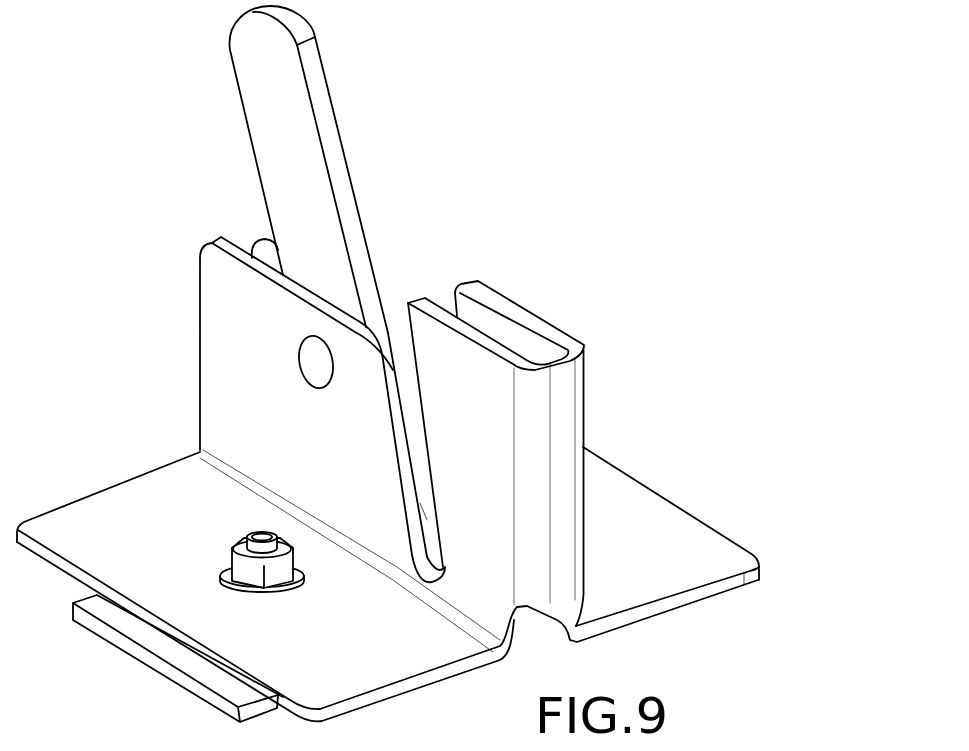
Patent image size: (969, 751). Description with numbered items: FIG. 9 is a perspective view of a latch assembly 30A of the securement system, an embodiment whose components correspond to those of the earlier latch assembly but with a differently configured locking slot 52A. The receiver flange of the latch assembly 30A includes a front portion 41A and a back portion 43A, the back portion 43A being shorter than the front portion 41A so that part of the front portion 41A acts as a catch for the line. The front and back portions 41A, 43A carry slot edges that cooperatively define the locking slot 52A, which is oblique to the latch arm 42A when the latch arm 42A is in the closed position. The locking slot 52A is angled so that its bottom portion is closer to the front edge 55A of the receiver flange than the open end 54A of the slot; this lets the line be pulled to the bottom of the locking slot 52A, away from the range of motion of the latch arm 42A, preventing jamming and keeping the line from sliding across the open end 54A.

The latch assembly 30A is at (546, 259).
The front portion 41A is at (482, 398).
The latch arm 42A is at (257, 70).
The back portion 43A is at (231, 368).
The locking slot 52A is at (408, 569).
The open end 54A is at (394, 320).
The front edge 55A is at (562, 550).